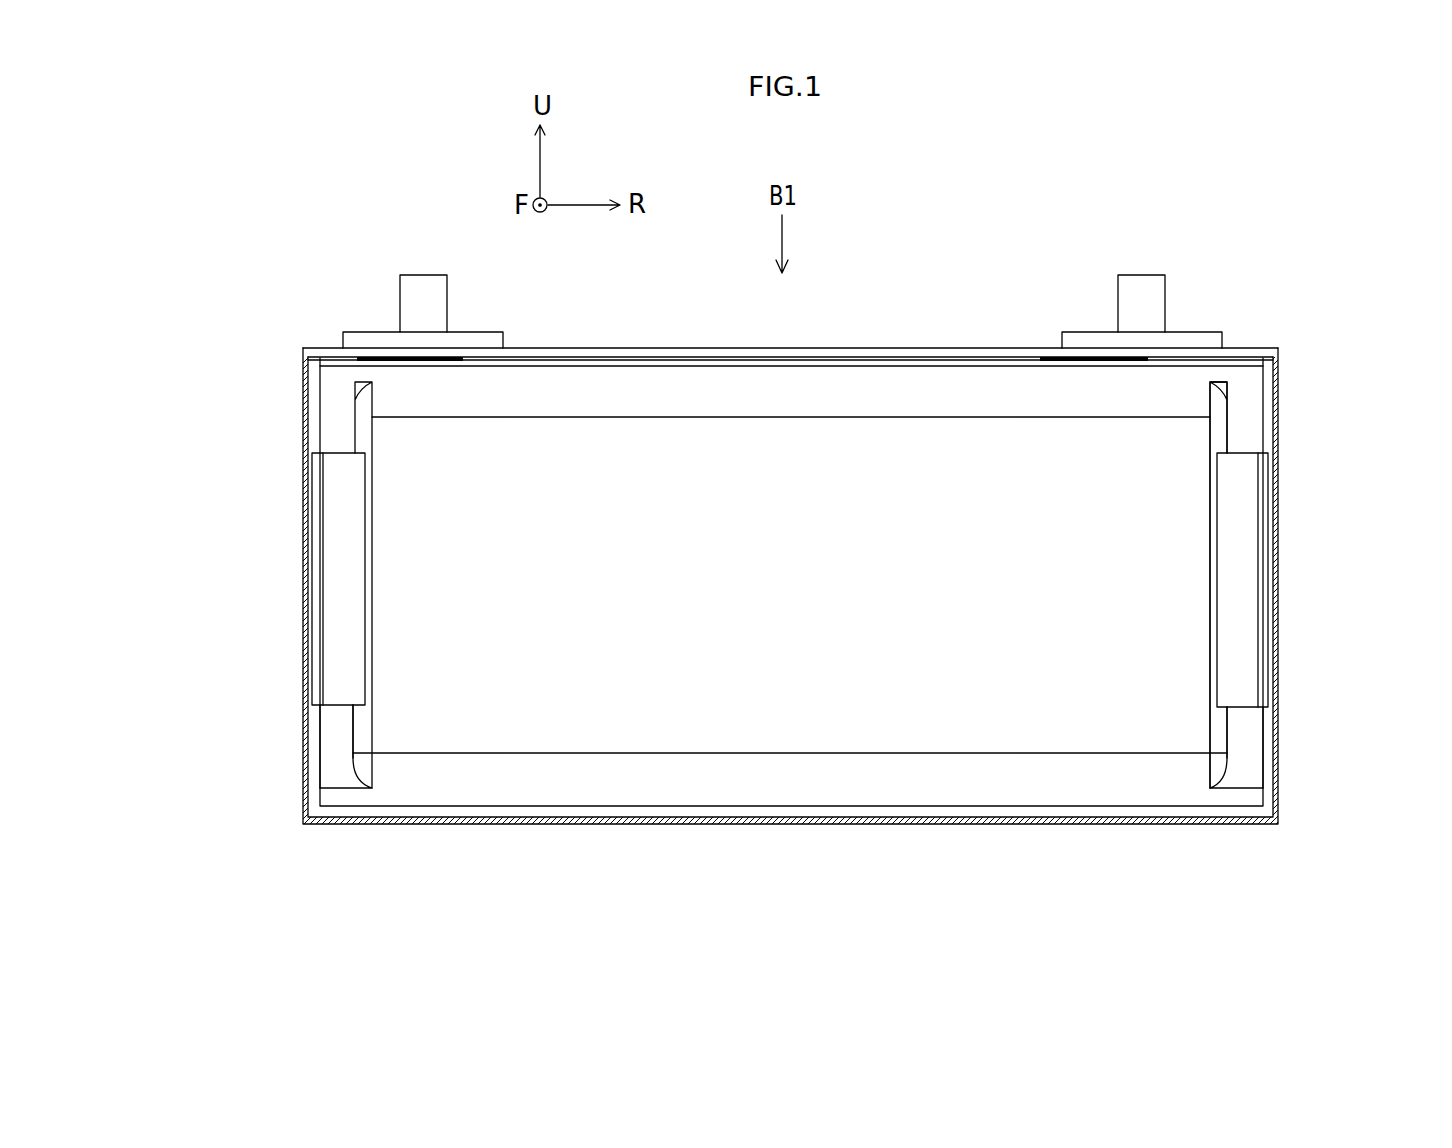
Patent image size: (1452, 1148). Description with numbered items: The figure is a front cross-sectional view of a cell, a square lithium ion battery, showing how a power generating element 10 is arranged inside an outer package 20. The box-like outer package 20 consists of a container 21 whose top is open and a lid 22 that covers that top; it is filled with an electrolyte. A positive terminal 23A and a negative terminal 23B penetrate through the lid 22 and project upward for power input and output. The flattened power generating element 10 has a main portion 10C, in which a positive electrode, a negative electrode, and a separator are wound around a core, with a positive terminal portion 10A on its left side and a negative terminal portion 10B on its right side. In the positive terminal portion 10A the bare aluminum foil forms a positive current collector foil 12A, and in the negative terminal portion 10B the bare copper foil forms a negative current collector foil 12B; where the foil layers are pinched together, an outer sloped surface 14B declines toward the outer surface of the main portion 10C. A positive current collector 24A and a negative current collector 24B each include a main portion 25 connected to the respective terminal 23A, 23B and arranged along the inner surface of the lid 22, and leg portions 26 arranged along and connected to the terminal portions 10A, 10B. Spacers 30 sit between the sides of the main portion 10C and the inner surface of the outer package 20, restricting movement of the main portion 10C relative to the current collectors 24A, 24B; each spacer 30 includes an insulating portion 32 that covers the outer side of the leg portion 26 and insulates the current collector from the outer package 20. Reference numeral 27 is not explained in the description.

The power generating element 10 is at (788, 668).
The positive terminal portion 10A is at (340, 772).
The negative terminal portion 10B is at (1240, 770).
The main portion 10C is at (611, 732).
The positive current collector foil 12A is at (330, 724).
The negative current collector foil 12B is at (1245, 725).
The outer sloped surface 14B is at (358, 738).
The outer package 20 is at (855, 573).
The container 21 is at (1282, 390).
The lid 22 is at (1244, 352).
The positive terminal 23A is at (427, 287).
The negative terminal 23B is at (1140, 287).
The positive current collector 24A is at (761, 572).
The negative current collector 24B is at (1362, 418).
The main portion 25 is at (372, 360).
The leg portion 26 is at (340, 413).
The insulating sheet 27 is at (340, 633).
The spacer 30 is at (792, 580).
The insulating portion 32 is at (340, 593).